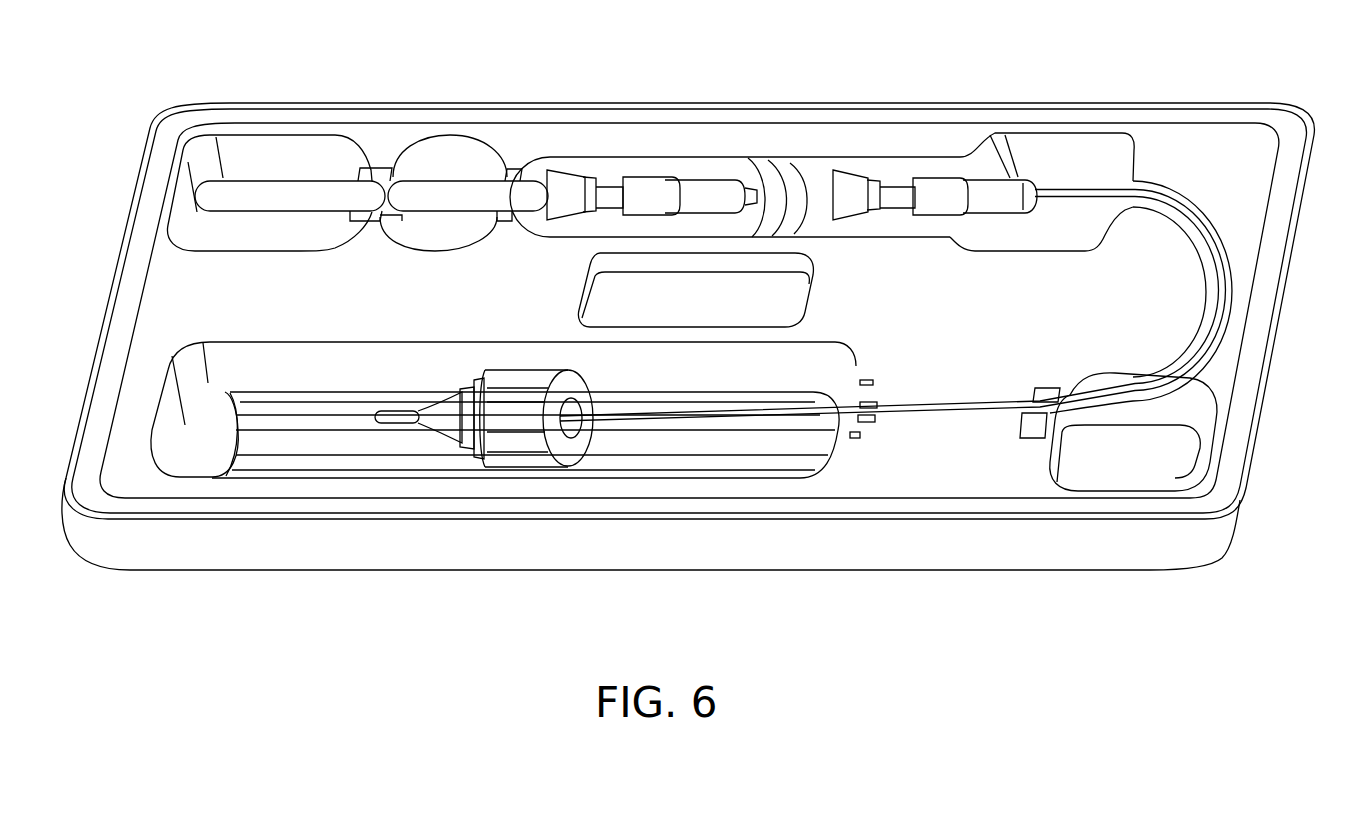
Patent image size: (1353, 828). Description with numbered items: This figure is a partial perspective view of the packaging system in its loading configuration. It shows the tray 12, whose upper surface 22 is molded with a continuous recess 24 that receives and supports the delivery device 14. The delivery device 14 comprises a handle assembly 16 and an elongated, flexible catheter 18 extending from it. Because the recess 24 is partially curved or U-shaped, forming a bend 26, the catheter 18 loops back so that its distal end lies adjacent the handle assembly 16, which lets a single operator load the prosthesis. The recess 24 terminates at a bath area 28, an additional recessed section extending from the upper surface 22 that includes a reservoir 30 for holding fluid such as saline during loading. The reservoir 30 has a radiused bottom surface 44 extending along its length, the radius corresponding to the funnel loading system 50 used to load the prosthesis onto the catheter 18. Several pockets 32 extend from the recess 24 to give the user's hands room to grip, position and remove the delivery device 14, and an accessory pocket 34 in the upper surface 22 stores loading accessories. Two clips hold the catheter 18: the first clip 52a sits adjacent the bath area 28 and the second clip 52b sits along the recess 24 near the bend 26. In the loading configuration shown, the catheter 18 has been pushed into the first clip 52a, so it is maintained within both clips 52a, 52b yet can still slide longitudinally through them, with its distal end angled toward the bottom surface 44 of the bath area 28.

The tray 12 is at (1086, 94).
The delivery device 14 is at (740, 170).
The handle assembly 16 is at (442, 172).
The catheter 18 is at (1222, 243).
The upper surface 22 is at (1238, 143).
The recess 24 is at (1123, 150).
The bend 26 is at (1203, 300).
The bath area 28 is at (835, 362).
The reservoir 30 is at (190, 466).
The pockets 32 is at (305, 150).
The accessory pocket 34 is at (790, 291).
The bottom surface 44 is at (327, 466).
The funnel loading system 50 is at (525, 466).
The first clip 52a is at (873, 397).
The second clip 52b is at (1052, 386).